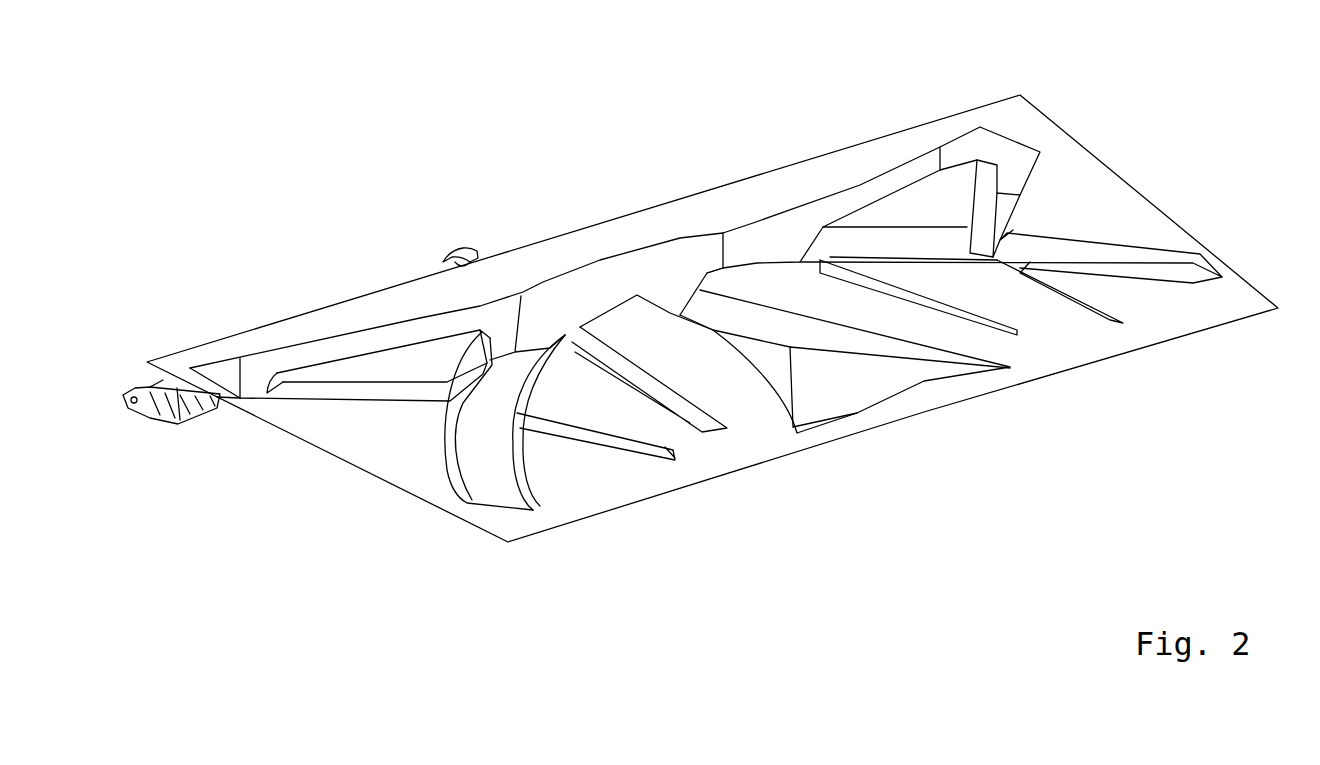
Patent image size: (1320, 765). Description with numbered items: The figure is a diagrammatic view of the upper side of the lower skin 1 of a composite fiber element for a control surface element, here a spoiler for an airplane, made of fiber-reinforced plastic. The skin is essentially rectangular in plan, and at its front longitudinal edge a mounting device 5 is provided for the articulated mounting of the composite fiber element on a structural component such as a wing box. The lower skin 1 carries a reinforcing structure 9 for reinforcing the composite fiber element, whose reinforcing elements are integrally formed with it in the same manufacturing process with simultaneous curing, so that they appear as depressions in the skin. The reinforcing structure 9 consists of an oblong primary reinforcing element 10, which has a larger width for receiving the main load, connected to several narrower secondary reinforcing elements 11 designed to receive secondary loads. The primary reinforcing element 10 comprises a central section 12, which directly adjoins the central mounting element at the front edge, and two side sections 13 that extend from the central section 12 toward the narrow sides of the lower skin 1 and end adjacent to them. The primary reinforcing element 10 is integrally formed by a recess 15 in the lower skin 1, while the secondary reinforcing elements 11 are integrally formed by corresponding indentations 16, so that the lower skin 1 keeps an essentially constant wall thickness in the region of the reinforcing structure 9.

The lower skin 1 is at (285, 489).
The mounting device 5 is at (458, 221).
The reinforcing structure 9 is at (504, 495).
The primary reinforcing element 10 is at (777, 231).
The secondary reinforcing elements 11 is at (697, 412).
The central section 12 is at (600, 267).
The side sections 13 is at (1090, 242).
The recess 15 is at (674, 240).
The indentations 16 is at (1130, 255).